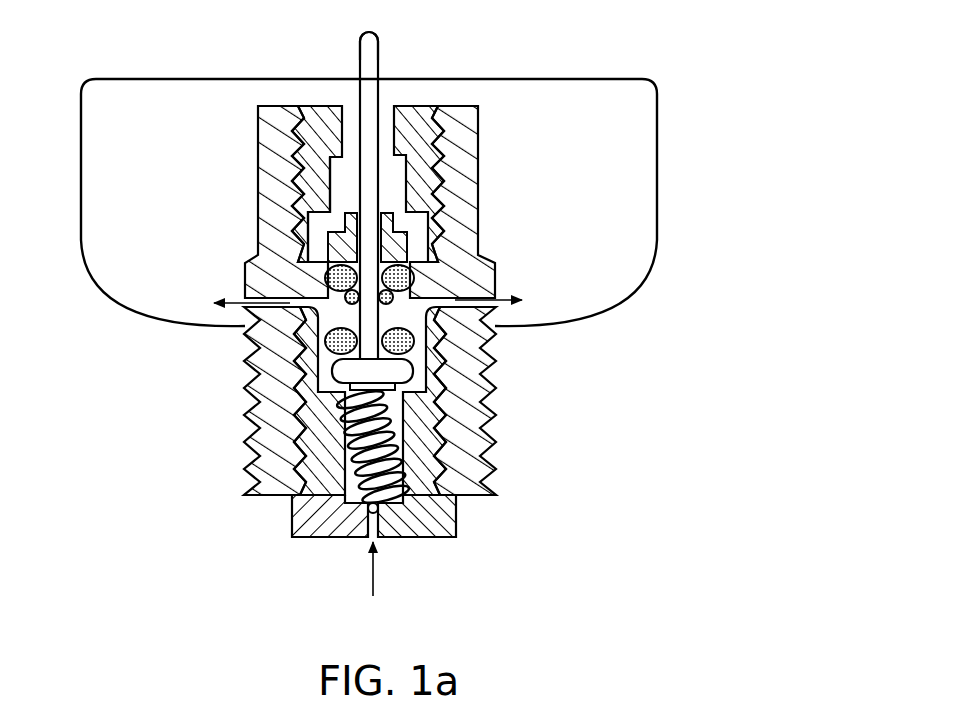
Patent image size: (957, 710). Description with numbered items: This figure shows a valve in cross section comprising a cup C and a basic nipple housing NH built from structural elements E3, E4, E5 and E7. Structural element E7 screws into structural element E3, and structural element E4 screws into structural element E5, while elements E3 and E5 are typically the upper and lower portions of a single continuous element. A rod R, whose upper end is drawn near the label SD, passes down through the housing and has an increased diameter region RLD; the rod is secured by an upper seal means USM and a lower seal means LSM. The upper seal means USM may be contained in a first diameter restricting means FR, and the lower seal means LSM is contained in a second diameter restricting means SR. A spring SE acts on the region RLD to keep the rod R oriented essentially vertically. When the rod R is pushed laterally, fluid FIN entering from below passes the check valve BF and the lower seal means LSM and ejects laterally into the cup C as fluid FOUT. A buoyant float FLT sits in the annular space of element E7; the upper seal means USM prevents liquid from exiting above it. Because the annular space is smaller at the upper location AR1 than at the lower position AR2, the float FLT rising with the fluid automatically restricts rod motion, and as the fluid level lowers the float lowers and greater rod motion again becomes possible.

The cup C is at (669, 108).
The rod R is at (386, 55).
The stem drive end SD is at (357, 52).
The structural element E3 is at (270, 236).
The structural element E7 is at (419, 126).
The upper annular space location AR1 is at (344, 136).
The lower annular space position AR2 is at (341, 186).
The float FLT is at (405, 236).
The first diameter restricting means FR is at (433, 252).
The upper seal means USM is at (417, 280).
The lower seal means LSM is at (420, 347).
The fluid out FOUT is at (371, 297).
The increased diameter region RLD is at (331, 380).
The second diameter restricting means SR is at (336, 376).
The nipple housing NH is at (218, 481).
The structural element E5 is at (467, 427).
The structural element E4 is at (419, 517).
The spring SE is at (399, 461).
The check valve BF is at (363, 516).
The fluid in FIN is at (374, 583).